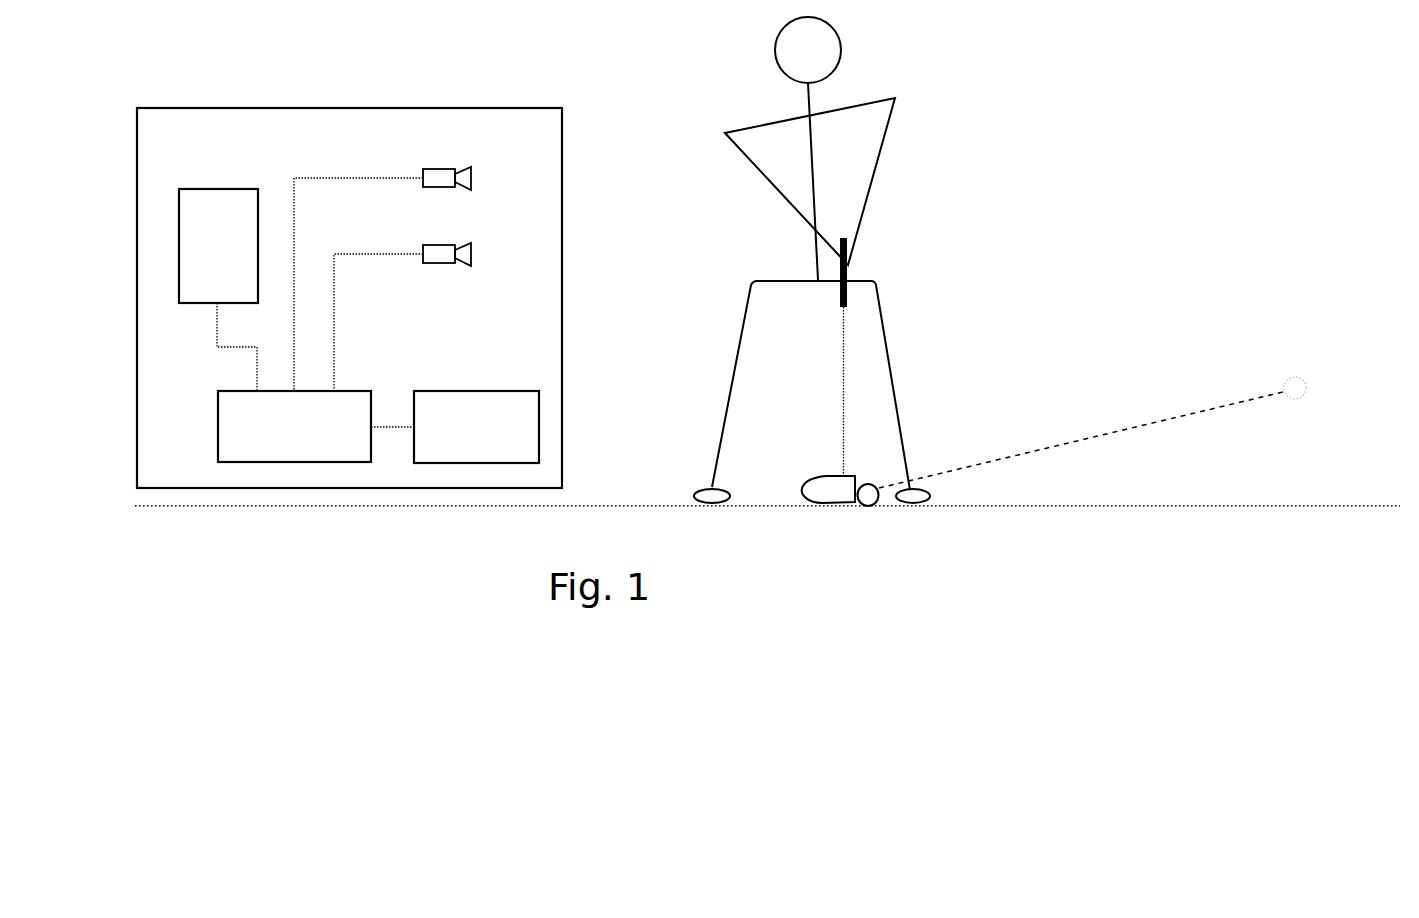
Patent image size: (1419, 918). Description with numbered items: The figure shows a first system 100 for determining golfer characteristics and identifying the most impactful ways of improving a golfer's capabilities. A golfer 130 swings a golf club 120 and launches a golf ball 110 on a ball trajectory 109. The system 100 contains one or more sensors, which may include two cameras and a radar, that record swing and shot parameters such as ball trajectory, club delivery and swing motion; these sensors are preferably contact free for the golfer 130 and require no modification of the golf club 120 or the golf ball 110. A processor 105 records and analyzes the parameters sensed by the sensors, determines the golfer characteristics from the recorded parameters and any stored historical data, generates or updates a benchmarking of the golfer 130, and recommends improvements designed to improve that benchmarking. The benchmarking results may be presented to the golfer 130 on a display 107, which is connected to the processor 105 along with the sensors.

The first system 100 is at (174, 107).
The processor 105 is at (218, 425).
The display 107 is at (213, 189).
The ball trajectory 109 is at (1160, 422).
The golf ball 110 is at (868, 484).
The golf club 120 is at (837, 503).
The golfer 130 is at (877, 80).